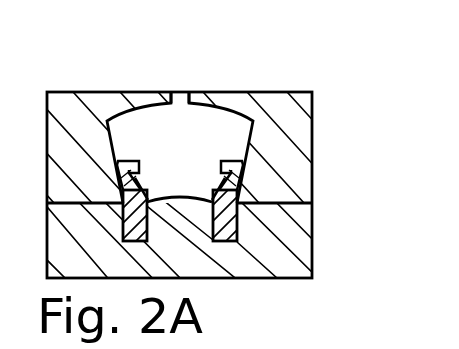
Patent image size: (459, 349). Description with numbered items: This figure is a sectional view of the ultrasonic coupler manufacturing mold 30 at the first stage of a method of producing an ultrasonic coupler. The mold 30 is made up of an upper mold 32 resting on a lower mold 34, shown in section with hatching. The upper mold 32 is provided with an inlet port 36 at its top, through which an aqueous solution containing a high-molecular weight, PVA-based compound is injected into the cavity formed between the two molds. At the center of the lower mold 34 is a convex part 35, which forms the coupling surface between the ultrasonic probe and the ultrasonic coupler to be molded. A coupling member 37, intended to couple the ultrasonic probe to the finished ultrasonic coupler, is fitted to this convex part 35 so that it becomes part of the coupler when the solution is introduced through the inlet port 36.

The ultrasonic coupler manufacturing mold 30 is at (347, 72).
The upper mold 32 is at (308, 134).
The lower mold 34 is at (308, 242).
The convex part 35 is at (176, 194).
The inlet port 36 is at (183, 84).
The coupling member 37 is at (228, 241).